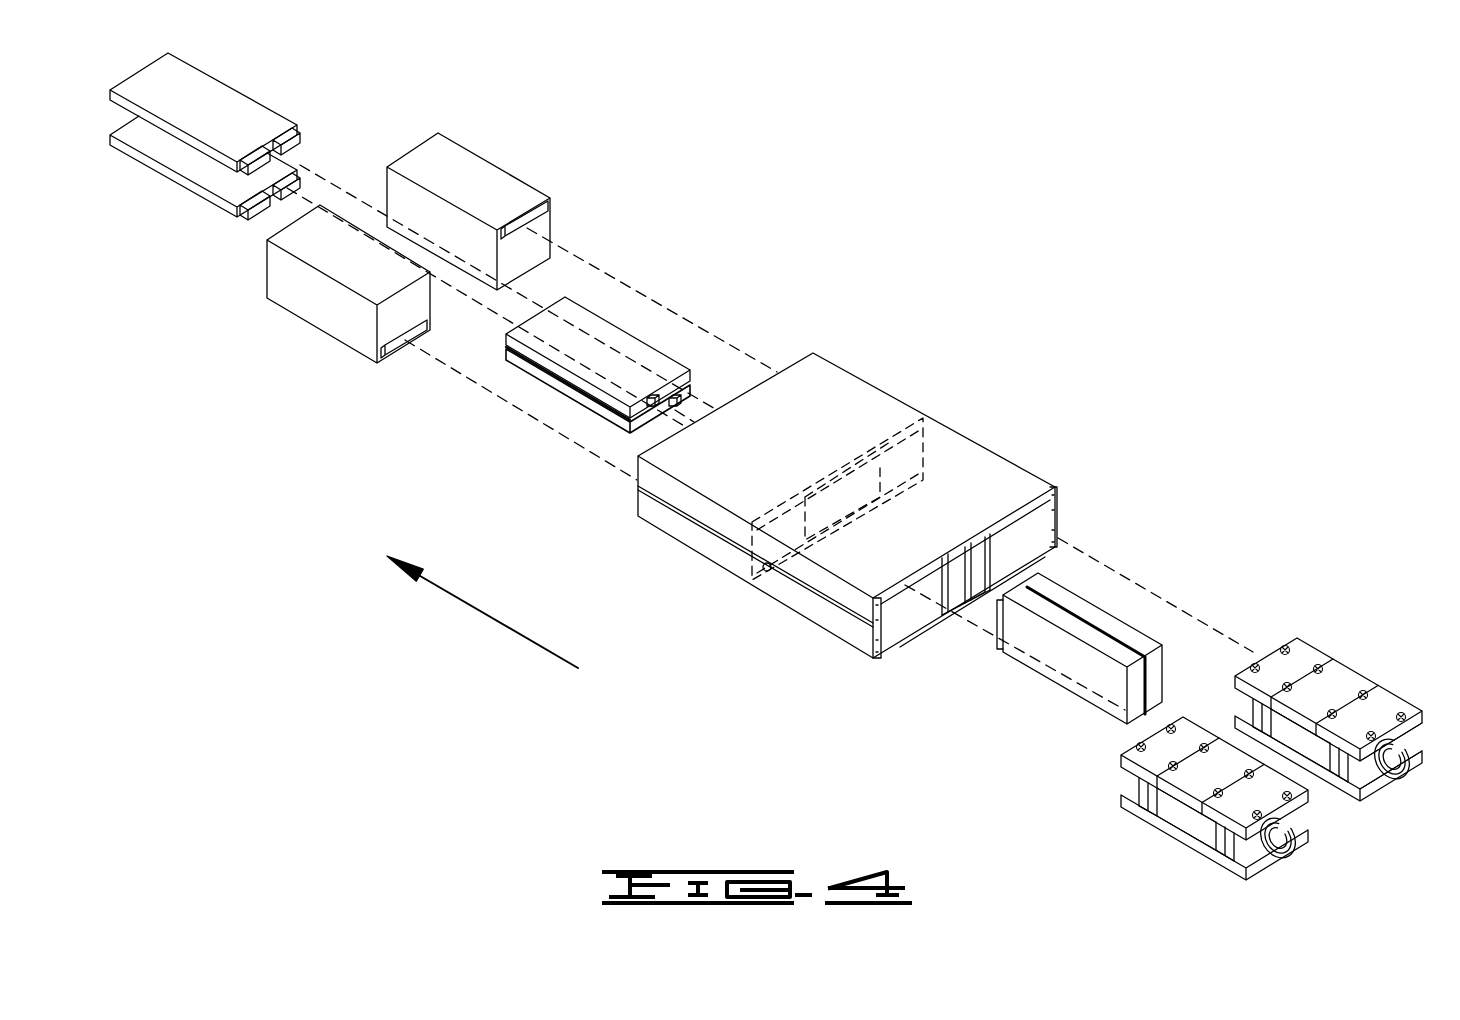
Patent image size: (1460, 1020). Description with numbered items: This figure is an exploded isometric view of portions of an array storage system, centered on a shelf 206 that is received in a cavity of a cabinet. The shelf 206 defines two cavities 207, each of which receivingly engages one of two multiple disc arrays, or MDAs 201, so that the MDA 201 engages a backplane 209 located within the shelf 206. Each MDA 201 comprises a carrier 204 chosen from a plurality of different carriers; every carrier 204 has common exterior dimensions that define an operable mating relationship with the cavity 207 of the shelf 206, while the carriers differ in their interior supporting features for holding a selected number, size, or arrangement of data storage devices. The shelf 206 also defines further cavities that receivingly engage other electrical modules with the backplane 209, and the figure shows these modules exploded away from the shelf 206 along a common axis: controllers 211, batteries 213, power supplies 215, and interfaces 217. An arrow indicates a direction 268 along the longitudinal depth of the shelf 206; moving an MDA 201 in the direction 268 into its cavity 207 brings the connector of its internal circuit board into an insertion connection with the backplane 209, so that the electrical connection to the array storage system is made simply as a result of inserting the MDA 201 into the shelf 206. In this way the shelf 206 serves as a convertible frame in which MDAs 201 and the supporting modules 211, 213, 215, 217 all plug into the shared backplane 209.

The multiple disc array (MDA) 201 is at (1241, 726).
The carrier 204 is at (1366, 690).
The shelf 206 is at (869, 513).
The cavity 207 is at (893, 625).
The backplane 209 is at (847, 483).
The controller 211 is at (1130, 630).
The battery 213 is at (625, 337).
The power supply 215 is at (492, 178).
The interface 217 is at (257, 117).
The direction 268 is at (503, 621).